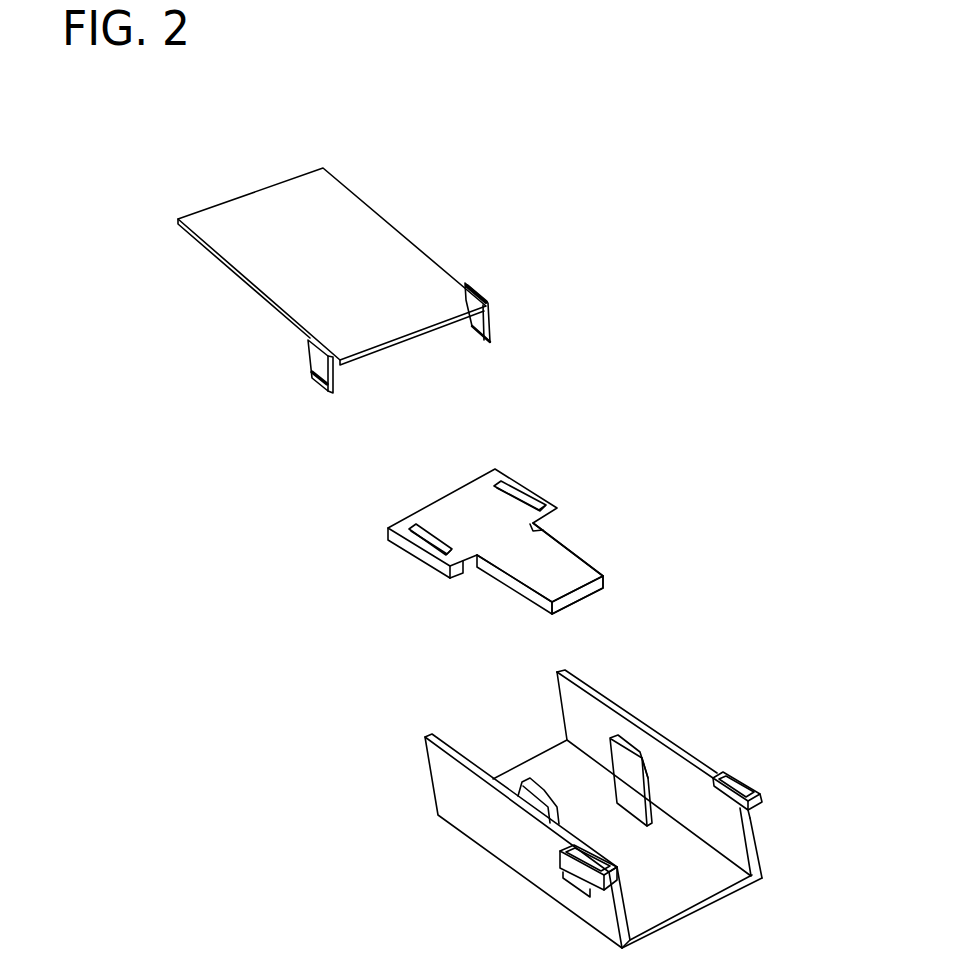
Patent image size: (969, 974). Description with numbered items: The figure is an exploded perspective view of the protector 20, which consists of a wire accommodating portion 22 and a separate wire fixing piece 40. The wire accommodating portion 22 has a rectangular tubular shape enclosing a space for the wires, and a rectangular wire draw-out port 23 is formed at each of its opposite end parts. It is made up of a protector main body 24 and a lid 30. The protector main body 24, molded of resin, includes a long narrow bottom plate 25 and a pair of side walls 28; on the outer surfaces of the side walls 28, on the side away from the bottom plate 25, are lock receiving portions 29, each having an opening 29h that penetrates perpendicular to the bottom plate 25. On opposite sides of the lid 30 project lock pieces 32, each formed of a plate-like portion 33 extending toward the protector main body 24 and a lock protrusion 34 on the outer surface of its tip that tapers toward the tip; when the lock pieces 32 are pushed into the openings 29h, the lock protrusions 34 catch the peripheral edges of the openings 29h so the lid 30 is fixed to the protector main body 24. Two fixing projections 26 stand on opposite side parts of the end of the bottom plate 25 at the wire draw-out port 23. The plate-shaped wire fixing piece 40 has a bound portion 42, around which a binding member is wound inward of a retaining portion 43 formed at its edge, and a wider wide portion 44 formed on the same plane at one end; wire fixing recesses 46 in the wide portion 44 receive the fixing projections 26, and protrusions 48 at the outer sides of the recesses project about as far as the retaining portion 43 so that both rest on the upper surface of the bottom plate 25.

The protector 20 is at (382, 339).
The wire accommodating portion 22 is at (200, 545).
The wire draw-out port 23 is at (619, 814).
The protector main body 24 is at (505, 770).
The bottom plate 25 is at (690, 892).
The fixing projection 26 is at (617, 797).
The side wall 28 is at (633, 718).
The lock receiving portion 29 is at (687, 844).
The opening 29h is at (735, 773).
The lid 30 is at (382, 368).
The lock piece 32 is at (447, 350).
The plate-like portion 33 is at (340, 367).
The lock protrusion 34 is at (396, 360).
The wire fixing piece 40 is at (507, 535).
The bound portion 42 is at (567, 546).
The retaining portion 43 is at (587, 597).
The wide portion 44 is at (470, 479).
The wire fixing recess 46 is at (513, 483).
The protrusion 48 is at (558, 527).